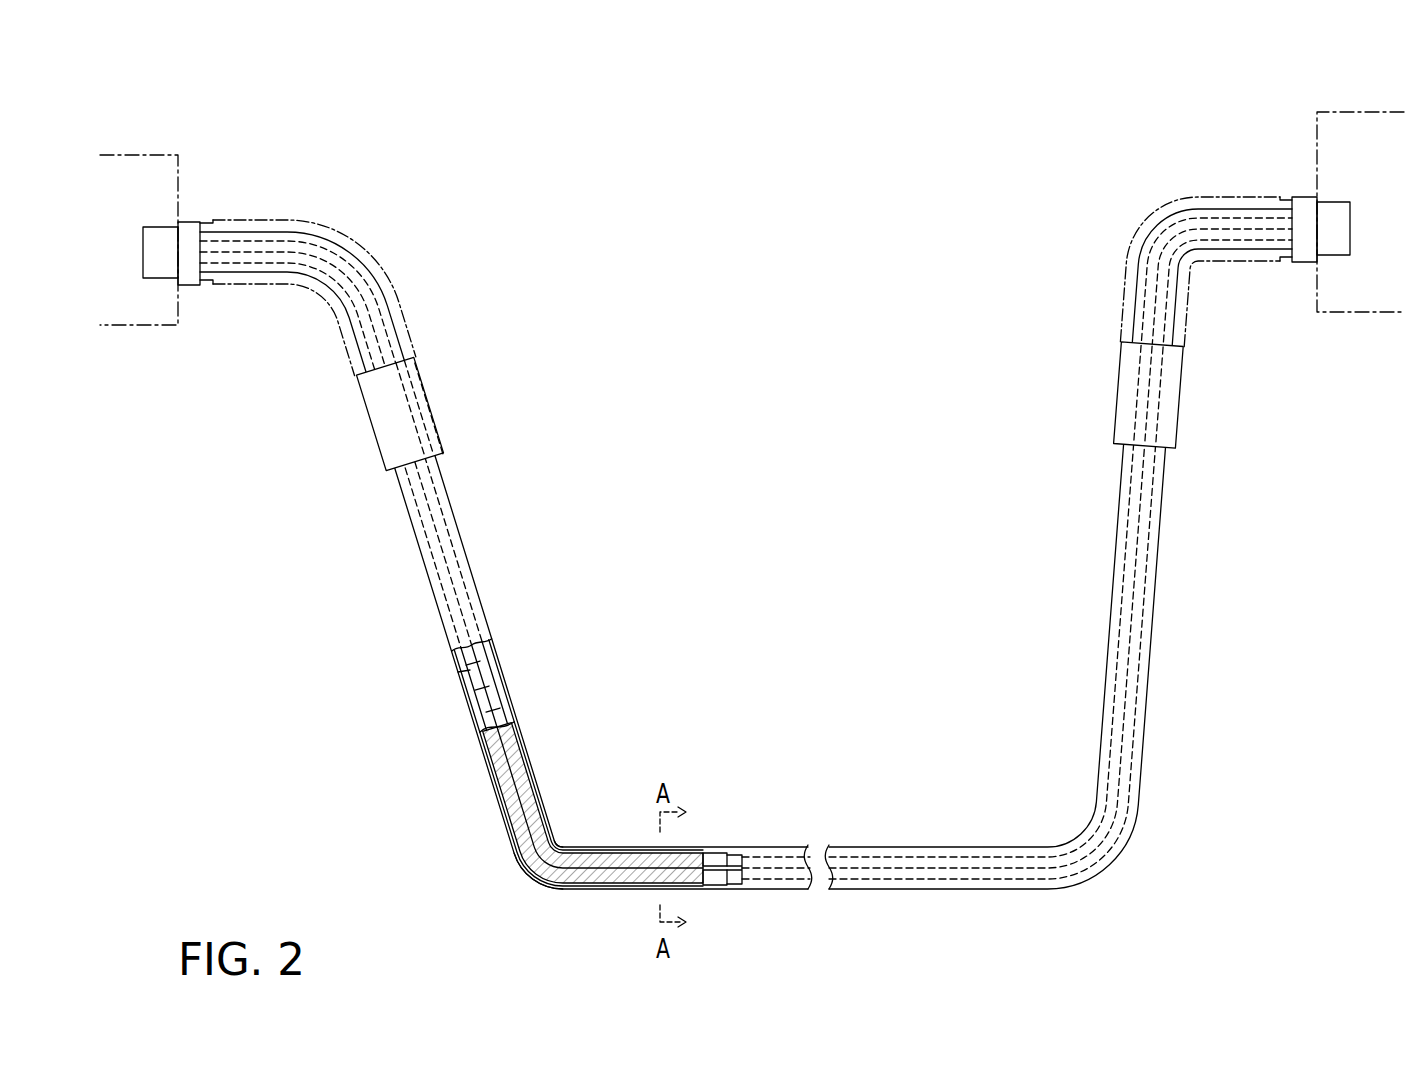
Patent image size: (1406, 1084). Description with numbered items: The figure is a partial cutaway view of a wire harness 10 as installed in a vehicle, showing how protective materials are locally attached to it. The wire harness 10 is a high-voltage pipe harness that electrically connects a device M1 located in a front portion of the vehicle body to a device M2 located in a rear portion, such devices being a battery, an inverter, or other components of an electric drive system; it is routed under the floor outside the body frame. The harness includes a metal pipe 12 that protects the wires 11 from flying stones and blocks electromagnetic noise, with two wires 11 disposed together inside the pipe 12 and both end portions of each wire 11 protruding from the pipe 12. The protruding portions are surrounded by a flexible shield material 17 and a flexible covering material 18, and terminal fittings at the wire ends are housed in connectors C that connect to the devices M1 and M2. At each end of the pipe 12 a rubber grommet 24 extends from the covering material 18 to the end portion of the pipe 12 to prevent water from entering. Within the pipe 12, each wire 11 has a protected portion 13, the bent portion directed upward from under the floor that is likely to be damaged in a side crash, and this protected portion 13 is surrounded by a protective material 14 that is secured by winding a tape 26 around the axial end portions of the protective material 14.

The wire harness 10 is at (526, 328).
The wire 11 is at (486, 681).
The pipe 12 is at (452, 538).
The protected portion 13 is at (516, 877).
The protective material 14 is at (550, 843).
The shield material 17 is at (336, 250).
The covering material 18 is at (371, 257).
The grommet 24 is at (372, 425).
The tape 26 is at (482, 730).
The connector C is at (158, 233).
The device M1 is at (142, 156).
The device M2 is at (1336, 114).